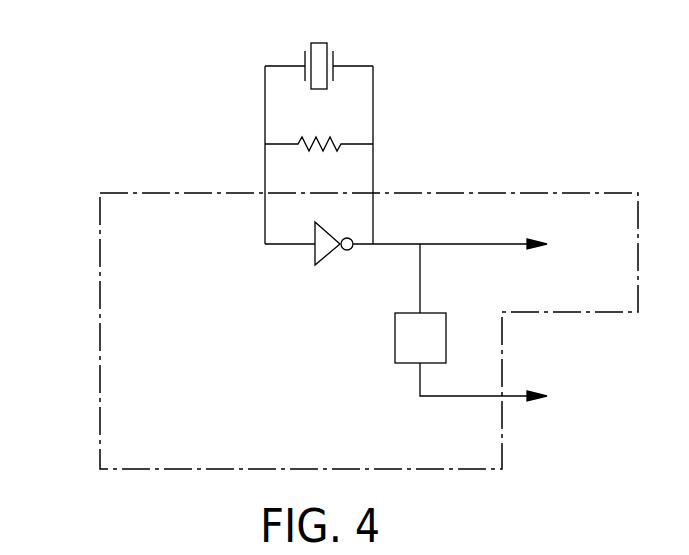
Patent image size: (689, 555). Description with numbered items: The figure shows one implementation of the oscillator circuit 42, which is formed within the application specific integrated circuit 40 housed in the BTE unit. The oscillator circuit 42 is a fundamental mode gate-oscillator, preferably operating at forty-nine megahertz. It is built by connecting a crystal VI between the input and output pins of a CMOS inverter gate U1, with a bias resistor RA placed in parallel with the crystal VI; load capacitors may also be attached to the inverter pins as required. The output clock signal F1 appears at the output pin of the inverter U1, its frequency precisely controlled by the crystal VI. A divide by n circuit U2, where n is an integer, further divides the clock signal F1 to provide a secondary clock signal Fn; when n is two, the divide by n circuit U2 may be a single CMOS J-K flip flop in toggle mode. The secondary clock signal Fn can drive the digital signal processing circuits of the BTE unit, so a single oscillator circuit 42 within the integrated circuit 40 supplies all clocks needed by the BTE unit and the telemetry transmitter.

The BTE ASIC 40 is at (100, 405).
The oscillator circuit 42 is at (425, 221).
The crystal VI is at (319, 51).
The bias resistor RA is at (319, 131).
The CMOS inverter gate U1 is at (311, 232).
The divide by n circuit U2 is at (427, 303).
The output clock signal F1 is at (465, 246).
The secondary clock signal Fn is at (509, 396).